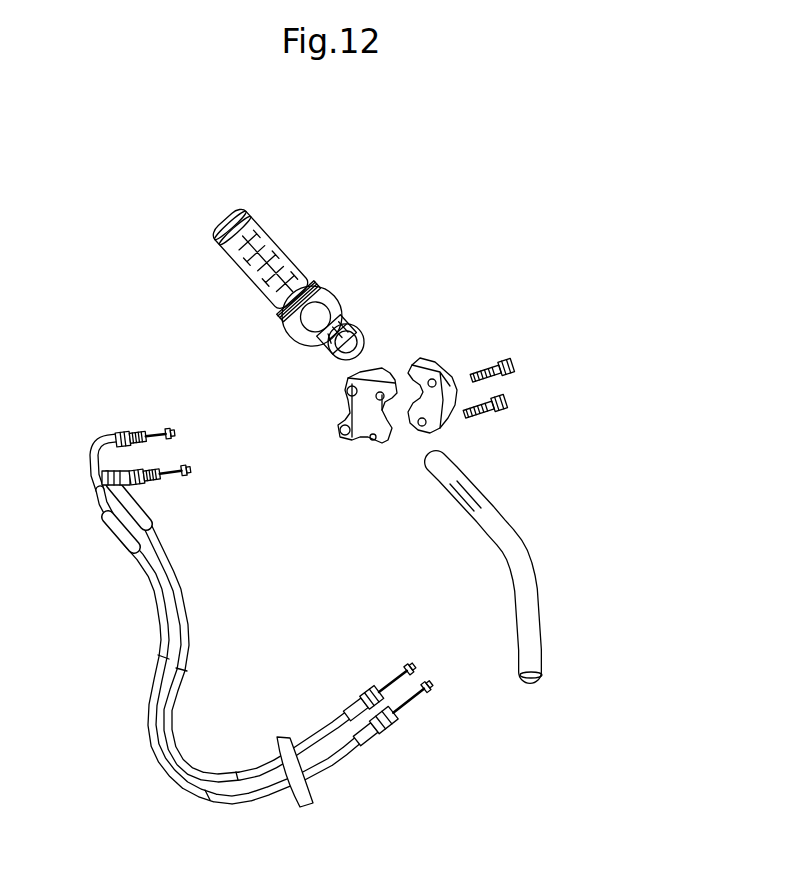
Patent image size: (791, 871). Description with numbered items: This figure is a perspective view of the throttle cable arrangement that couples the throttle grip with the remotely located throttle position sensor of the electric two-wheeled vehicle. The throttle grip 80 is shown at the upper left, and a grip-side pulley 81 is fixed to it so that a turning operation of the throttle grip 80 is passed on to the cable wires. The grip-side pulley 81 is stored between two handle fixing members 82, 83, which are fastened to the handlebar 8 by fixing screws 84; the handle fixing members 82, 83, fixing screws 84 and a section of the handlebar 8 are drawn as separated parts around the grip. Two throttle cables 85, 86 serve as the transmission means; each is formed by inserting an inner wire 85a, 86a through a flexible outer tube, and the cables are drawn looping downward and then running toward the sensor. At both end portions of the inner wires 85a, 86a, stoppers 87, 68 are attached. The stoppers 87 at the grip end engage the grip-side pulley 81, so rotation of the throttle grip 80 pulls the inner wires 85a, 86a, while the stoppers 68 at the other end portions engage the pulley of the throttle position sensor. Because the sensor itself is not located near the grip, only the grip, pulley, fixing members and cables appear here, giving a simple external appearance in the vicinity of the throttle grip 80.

The handlebar 8 is at (507, 538).
The throttle grip 80 is at (277, 240).
The grip-side pulley 81 is at (364, 326).
The handle fixing member 82 is at (380, 362).
The handle fixing member 83 is at (435, 358).
The fixing screw 84 is at (512, 365).
The throttle cable 85 is at (150, 575).
The inner wire 85a is at (395, 672).
The throttle cable 86 is at (182, 574).
The inner wire 86a is at (425, 707).
The stopper 87 is at (172, 430).
The stopper 68 is at (412, 660).